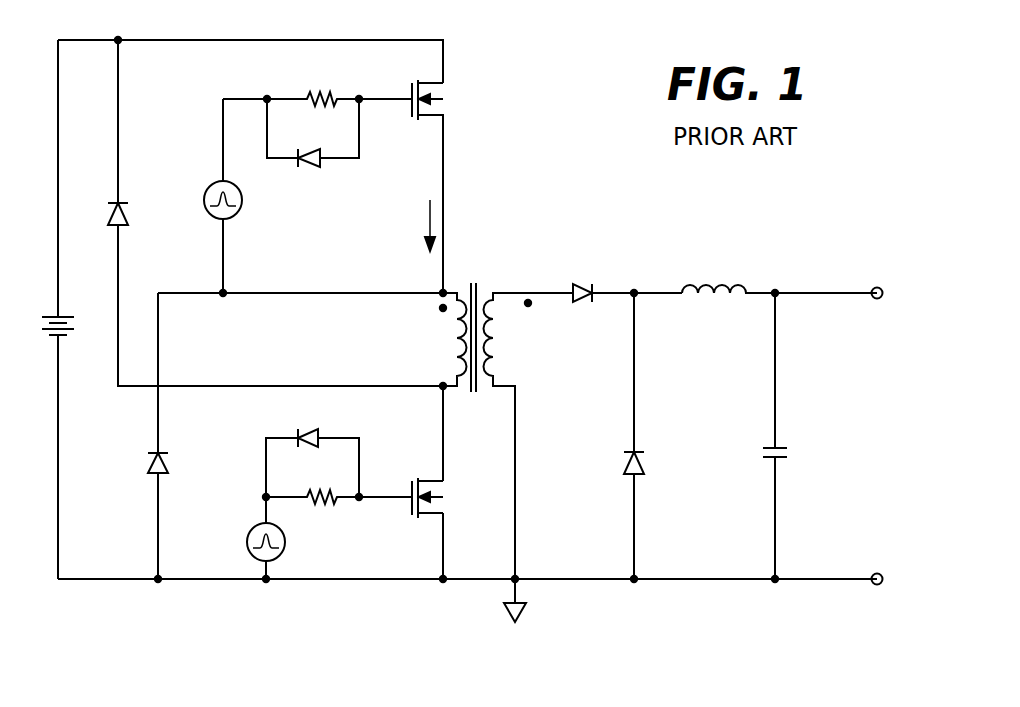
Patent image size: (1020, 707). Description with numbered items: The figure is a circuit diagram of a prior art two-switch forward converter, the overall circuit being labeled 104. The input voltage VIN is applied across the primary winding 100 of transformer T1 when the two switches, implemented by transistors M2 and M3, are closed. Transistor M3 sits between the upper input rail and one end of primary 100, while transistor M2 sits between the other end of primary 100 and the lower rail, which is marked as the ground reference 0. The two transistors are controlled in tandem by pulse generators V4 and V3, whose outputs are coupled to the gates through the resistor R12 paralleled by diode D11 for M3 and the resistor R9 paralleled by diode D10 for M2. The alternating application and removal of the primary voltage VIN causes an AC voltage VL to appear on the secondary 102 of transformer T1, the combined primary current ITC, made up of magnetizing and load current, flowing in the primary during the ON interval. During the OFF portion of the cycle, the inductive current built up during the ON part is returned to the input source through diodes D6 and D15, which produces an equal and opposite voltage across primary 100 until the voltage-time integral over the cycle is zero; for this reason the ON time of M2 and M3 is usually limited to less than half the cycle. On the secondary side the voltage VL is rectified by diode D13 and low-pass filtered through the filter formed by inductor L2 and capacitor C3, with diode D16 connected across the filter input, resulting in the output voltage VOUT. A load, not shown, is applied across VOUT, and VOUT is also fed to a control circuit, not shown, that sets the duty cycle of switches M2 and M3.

The prior art forward converter circuit 104 is at (216, 40).
The primary winding 100 is at (410, 335).
The secondary 102 is at (497, 339).
The transformer T1 is at (448, 393).
The transistor M3 is at (414, 177).
The transistor M2 is at (422, 484).
The gate resistor R12 is at (338, 114).
The gate resistor R9 is at (337, 483).
The gate diode D11 is at (313, 151).
The gate diode D10 is at (312, 449).
The diode D6 is at (275, 213).
The diode D15 is at (185, 437).
The diode D13 is at (617, 281).
The freewheeling diode D16 is at (609, 437).
The filter inductor L2 is at (782, 307).
The filter capacitor C3 is at (809, 439).
The pulse generator V4 is at (237, 196).
The pulse generator V3 is at (282, 539).
The input voltage VIN is at (70, 329).
The output voltage VOUT is at (820, 361).
The secondary voltage VL is at (650, 262).
The primary combined current ITC is at (412, 225).
The ground 0 is at (528, 602).